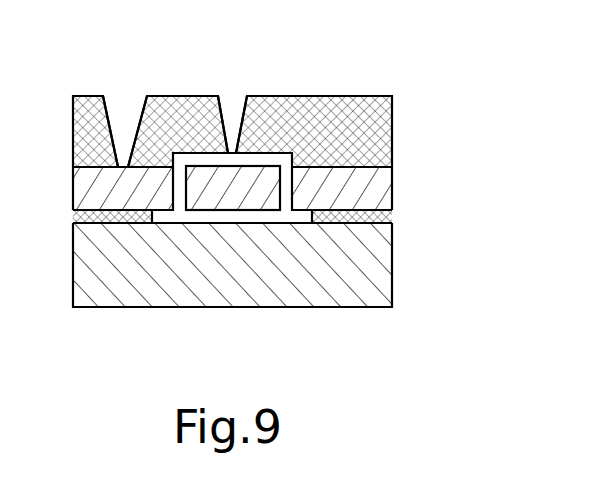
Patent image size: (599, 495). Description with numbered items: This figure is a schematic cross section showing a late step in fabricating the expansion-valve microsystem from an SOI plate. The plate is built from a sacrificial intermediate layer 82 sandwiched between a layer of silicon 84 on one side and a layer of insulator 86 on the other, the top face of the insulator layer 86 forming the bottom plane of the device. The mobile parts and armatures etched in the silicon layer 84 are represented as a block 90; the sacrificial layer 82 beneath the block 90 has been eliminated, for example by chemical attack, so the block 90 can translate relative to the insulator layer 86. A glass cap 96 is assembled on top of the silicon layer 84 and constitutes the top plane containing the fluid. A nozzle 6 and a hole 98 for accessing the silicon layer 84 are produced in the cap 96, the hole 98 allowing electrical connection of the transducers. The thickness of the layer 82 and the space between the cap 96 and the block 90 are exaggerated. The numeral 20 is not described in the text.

The nozzle 6 is at (235, 116).
The electrode 20 is at (258, 208).
The sacrificial intermediate layer 82 is at (375, 217).
The layer of silicon 84 is at (368, 195).
The layer of insulator 86 is at (367, 268).
The block 90 is at (214, 192).
The cap 96 is at (400, 93).
The hole 98 is at (137, 116).